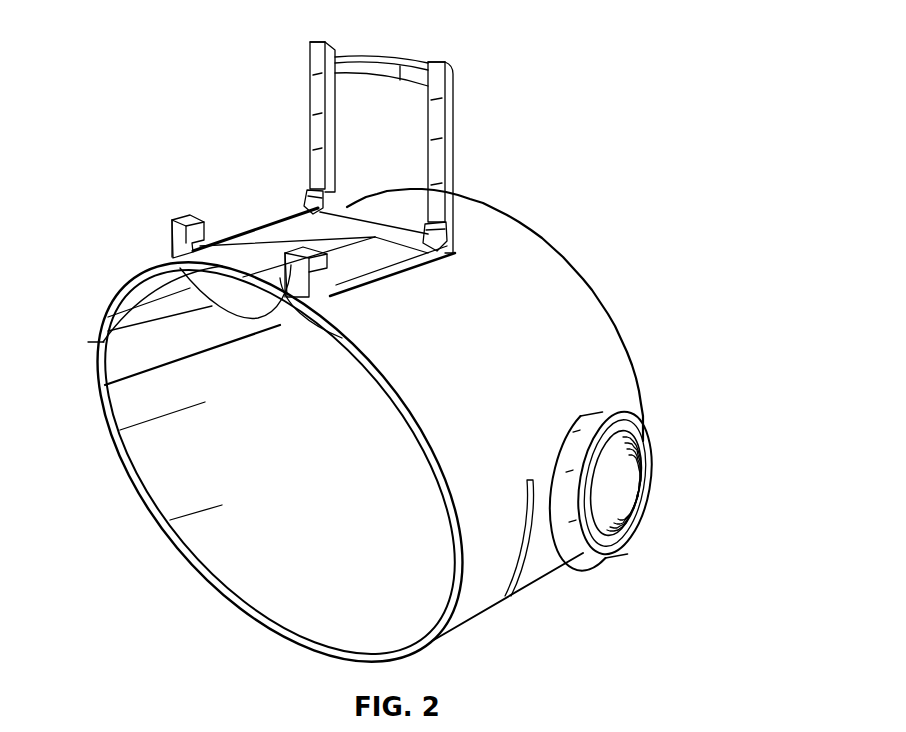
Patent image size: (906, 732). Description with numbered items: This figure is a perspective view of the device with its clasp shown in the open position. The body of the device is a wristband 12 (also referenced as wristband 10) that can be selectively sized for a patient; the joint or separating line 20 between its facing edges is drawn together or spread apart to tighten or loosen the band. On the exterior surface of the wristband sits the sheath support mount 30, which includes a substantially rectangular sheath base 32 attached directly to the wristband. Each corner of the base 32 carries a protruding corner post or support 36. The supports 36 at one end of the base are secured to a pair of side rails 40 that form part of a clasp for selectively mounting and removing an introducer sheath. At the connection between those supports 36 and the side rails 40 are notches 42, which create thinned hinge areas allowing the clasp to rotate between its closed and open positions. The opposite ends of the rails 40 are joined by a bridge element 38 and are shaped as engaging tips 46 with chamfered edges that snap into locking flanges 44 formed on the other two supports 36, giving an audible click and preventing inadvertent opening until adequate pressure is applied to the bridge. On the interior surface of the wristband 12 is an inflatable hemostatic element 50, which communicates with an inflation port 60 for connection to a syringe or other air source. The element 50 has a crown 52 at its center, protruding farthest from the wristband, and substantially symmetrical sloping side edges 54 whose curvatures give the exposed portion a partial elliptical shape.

The wristband 10 is at (576, 220).
The wristband 12 is at (327, 546).
The joint or separating line 20 is at (116, 390).
The sheath support mount 30 is at (333, 196).
The sheath base 32 is at (390, 242).
The corner post or support 36 is at (172, 226).
The bridge element 38 is at (365, 64).
The side rails 40 is at (312, 116).
The notches 42 is at (306, 191).
The locking flanges 44 is at (185, 218).
The engaging tips 46 is at (315, 58).
The hemostatic element 50 is at (236, 336).
The crown 52 is at (241, 301).
The sloping side edges 54 is at (296, 400).
The inflation port 60 is at (643, 440).